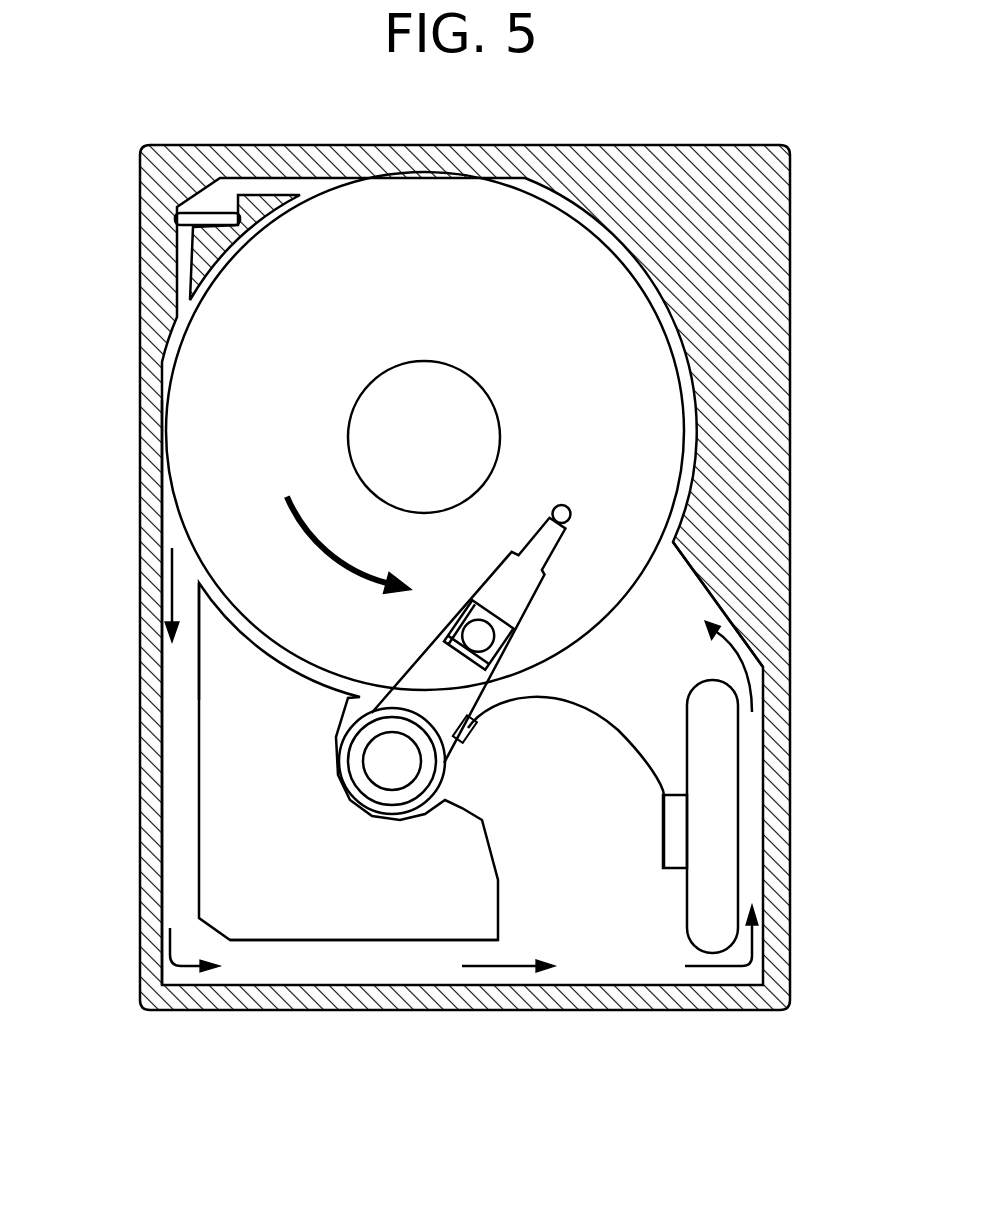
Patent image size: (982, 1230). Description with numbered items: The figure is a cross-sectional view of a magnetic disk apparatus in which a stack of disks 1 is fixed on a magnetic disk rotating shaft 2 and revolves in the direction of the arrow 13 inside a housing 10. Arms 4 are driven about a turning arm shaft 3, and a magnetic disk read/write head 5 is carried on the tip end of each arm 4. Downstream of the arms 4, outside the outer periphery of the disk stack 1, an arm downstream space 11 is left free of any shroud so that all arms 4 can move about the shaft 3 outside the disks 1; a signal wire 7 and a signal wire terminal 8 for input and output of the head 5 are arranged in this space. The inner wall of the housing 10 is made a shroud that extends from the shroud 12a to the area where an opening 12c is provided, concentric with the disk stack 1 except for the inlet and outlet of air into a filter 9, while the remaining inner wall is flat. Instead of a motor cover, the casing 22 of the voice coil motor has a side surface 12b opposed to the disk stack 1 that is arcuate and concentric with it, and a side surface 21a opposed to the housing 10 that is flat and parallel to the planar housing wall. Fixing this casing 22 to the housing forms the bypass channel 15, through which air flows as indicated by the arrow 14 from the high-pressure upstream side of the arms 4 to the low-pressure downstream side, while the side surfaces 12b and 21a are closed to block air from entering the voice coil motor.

The disk 1 is at (617, 332).
The magnetic disk rotating shaft 2 is at (453, 387).
The turning arm shaft 3 is at (407, 768).
The arm 4 is at (480, 635).
The magnetic disk read/write head 5 is at (565, 513).
The signal wire 7 is at (597, 712).
The signal wire terminal 8 is at (720, 848).
The filter 9 is at (203, 218).
The housing 10 is at (150, 993).
The arm downstream space 11 is at (668, 603).
The shroud 12a is at (705, 433).
The side surface 12b is at (208, 642).
The opening 12c is at (165, 530).
The arrow indicating direction of revolution 13 is at (285, 515).
The arrow indicating air flow 14 is at (503, 965).
The bypass channel 15 is at (168, 882).
The side surface 21a is at (199, 787).
The casing 22 is at (327, 840).